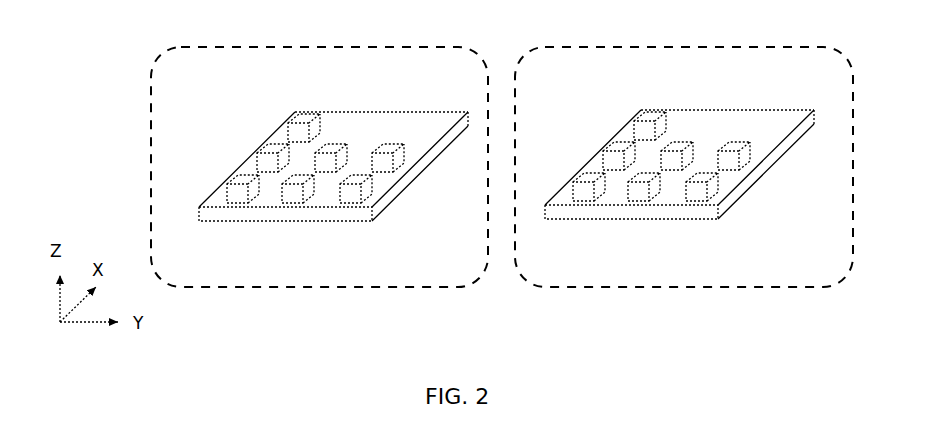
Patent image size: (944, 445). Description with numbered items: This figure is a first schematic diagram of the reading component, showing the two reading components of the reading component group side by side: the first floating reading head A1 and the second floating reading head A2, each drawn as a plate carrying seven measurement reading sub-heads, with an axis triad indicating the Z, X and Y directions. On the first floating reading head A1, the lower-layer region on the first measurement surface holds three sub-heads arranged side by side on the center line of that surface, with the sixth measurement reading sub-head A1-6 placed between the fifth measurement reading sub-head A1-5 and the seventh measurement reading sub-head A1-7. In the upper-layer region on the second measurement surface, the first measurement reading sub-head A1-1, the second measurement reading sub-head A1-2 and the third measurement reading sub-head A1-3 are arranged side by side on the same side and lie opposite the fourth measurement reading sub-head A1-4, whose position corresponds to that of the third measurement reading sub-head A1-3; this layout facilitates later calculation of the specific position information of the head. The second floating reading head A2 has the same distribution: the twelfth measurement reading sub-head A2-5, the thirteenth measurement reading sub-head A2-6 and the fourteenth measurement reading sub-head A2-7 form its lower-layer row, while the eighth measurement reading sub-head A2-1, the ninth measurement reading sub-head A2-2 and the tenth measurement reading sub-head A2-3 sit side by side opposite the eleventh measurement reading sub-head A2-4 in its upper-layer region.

The first floating reading head A1 is at (319, 150).
The first measurement reading sub-head A1-1 is at (352, 193).
The second measurement reading sub-head A1-2 is at (294, 195).
The third measurement reading sub-head A1-3 is at (238, 195).
The fourth measurement reading sub-head A1-4 is at (295, 128).
The fifth measurement reading sub-head A1-5 is at (272, 162).
The sixth measurement reading sub-head A1-6 is at (335, 154).
The seventh measurement reading sub-head A1-7 is at (397, 153).
The second floating reading head A2 is at (684, 151).
The eighth measurement reading sub-head A2-1 is at (698, 191).
The ninth measurement reading sub-head A2-2 is at (640, 193).
The tenth measurement reading sub-head A2-3 is at (584, 193).
The eleventh measurement reading sub-head A2-4 is at (640, 124).
The twelfth measurement reading sub-head A2-5 is at (616, 160).
The thirteenth measurement reading sub-head A2-6 is at (685, 150).
The fourteenth measurement reading sub-head A2-7 is at (745, 147).